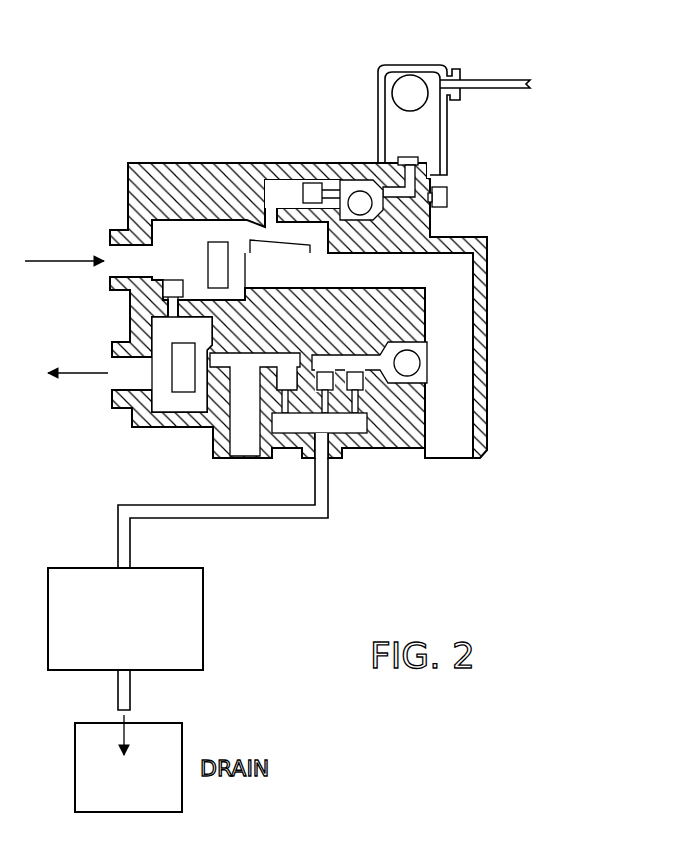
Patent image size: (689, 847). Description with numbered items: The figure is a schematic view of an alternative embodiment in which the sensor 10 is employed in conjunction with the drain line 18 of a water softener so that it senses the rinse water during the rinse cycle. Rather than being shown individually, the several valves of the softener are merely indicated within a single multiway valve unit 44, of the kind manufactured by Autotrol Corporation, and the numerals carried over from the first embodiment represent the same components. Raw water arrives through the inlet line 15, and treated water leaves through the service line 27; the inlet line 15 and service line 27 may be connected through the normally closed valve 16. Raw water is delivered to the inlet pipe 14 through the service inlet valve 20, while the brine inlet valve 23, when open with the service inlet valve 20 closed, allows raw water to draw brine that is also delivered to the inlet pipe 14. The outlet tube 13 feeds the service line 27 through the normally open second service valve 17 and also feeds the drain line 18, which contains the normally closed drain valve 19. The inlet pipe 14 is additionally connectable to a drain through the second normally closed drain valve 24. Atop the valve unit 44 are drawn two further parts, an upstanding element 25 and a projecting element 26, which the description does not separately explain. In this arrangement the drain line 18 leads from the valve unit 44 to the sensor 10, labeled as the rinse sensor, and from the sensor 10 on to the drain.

The sensor 10 is at (210, 620).
The outlet tube 13 is at (233, 452).
The inlet pipe 14 is at (470, 460).
The inlet line 15 is at (112, 240).
The normally closed valve 16 is at (172, 288).
The second service valve 17 is at (180, 395).
The drain line 18 is at (278, 512).
The drain valve 19 is at (284, 374).
The service inlet valve 20 is at (207, 255).
The brine inlet valve 23 is at (312, 185).
The second normally closed drain valve 24 is at (352, 370).
The solenoid tube 25 is at (410, 65).
The actuating lever 26 is at (520, 80).
The service line 27 is at (127, 383).
The multiway valve unit 44 is at (216, 162).